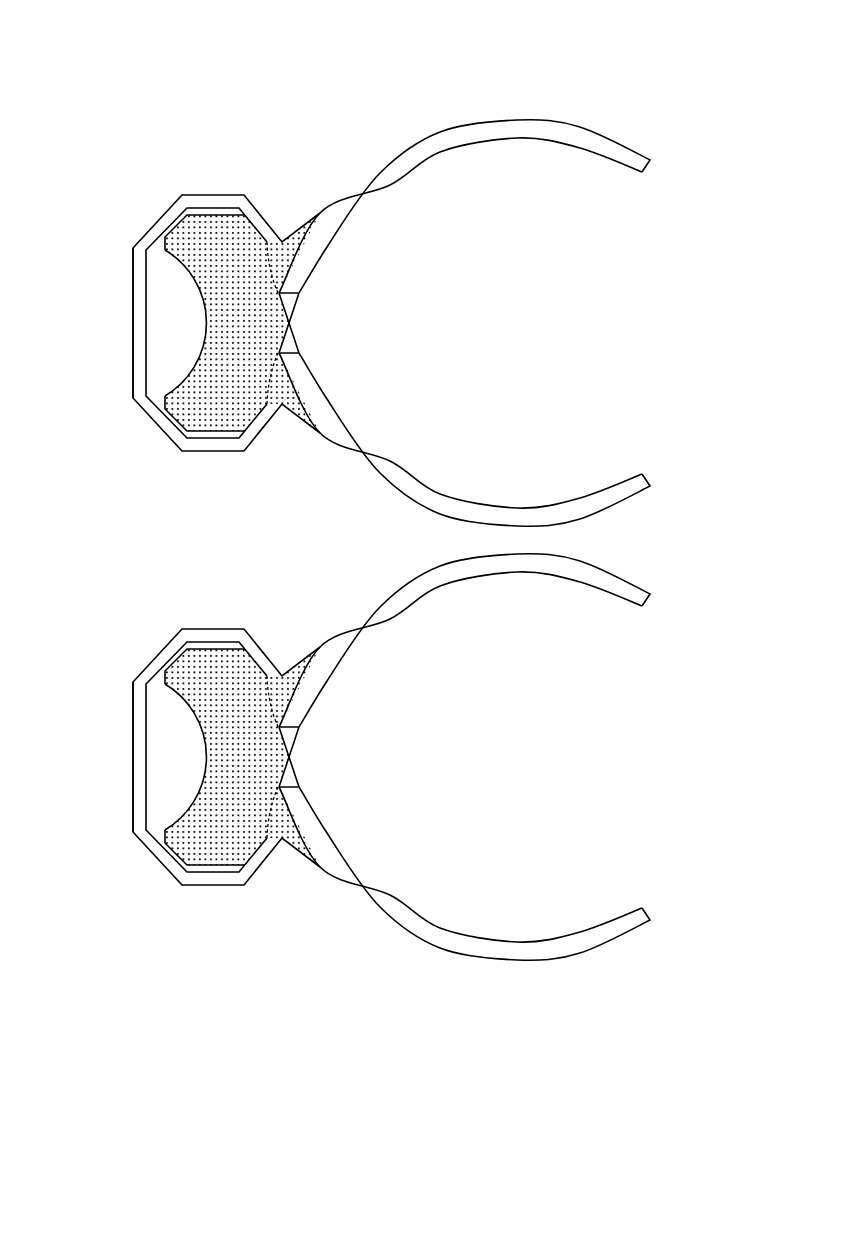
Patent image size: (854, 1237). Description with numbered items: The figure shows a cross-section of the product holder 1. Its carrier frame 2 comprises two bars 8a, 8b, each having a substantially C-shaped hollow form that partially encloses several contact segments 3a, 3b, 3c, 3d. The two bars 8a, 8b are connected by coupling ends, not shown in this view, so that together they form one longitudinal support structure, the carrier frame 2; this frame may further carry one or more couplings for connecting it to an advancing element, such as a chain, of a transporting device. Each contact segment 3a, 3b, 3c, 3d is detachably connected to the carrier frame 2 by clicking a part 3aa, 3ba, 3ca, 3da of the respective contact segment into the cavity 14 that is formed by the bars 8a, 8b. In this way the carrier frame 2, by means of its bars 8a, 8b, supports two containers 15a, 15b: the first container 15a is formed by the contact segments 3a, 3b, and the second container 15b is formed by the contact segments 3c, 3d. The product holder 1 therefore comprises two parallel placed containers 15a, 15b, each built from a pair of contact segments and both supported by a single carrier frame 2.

The product holder 1 is at (95, 79).
The carrier frame 2 is at (130, 449).
The contact segment 3a is at (514, 132).
The contact segment 3b is at (516, 510).
The contact segment 3c is at (514, 566).
The contact segment 3d is at (516, 944).
The part of contact segment 3aa is at (220, 242).
The part of contact segment 3ba is at (220, 407).
The part of contact segment 3ca is at (220, 676).
The part of contact segment 3da is at (220, 841).
The bar 8a is at (138, 345).
The bar 8b is at (138, 779).
The cavity 14 is at (177, 305).
The container 15a is at (487, 333).
The container 15b is at (487, 767).